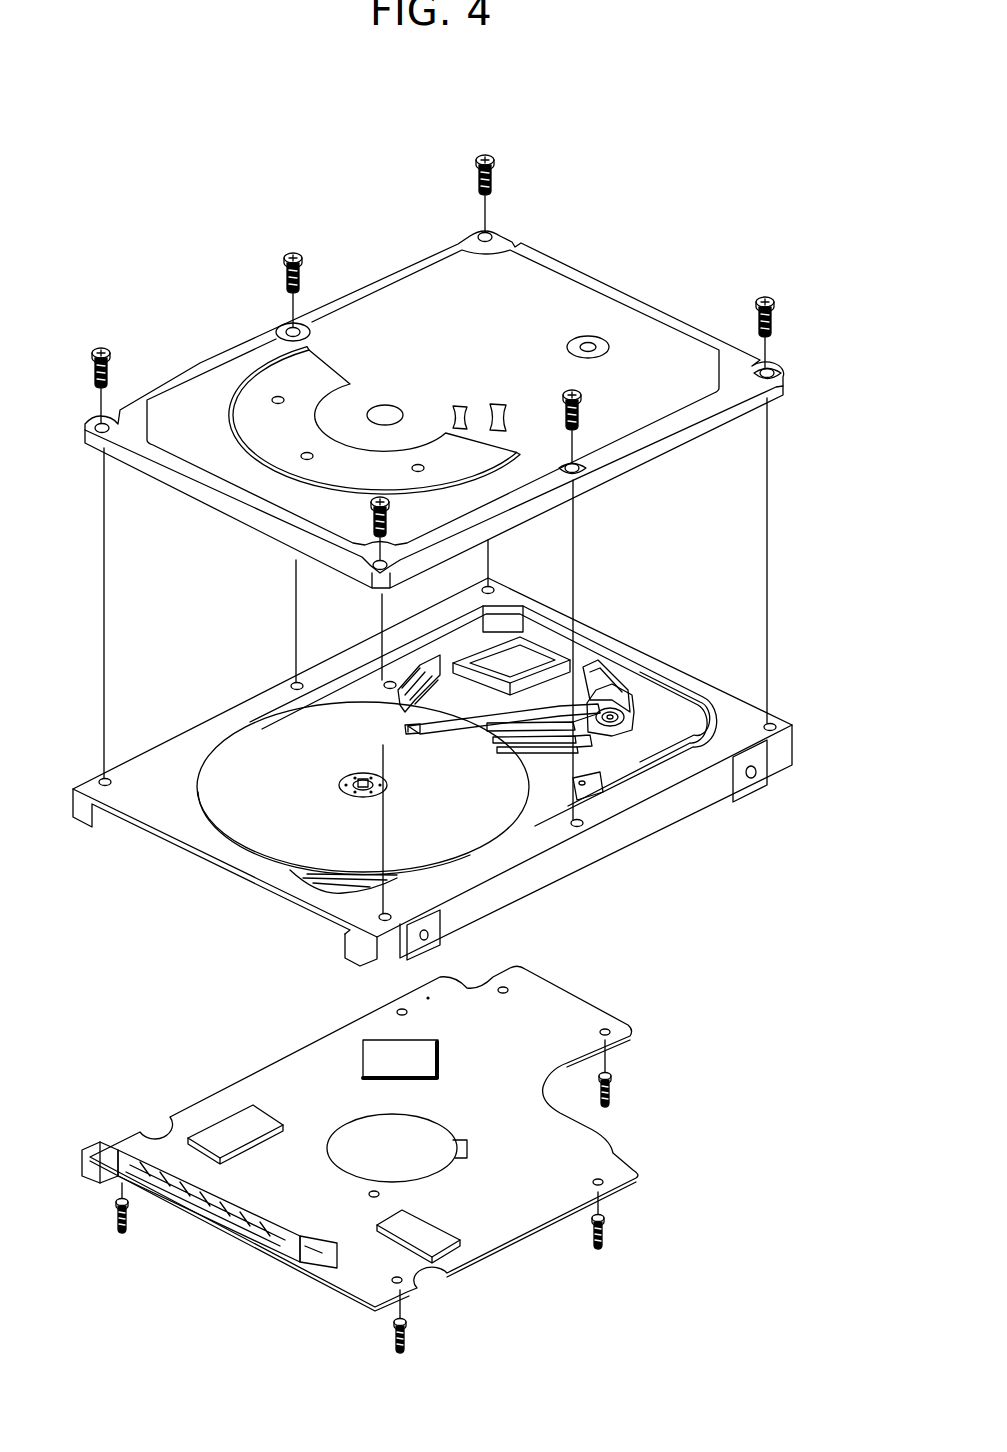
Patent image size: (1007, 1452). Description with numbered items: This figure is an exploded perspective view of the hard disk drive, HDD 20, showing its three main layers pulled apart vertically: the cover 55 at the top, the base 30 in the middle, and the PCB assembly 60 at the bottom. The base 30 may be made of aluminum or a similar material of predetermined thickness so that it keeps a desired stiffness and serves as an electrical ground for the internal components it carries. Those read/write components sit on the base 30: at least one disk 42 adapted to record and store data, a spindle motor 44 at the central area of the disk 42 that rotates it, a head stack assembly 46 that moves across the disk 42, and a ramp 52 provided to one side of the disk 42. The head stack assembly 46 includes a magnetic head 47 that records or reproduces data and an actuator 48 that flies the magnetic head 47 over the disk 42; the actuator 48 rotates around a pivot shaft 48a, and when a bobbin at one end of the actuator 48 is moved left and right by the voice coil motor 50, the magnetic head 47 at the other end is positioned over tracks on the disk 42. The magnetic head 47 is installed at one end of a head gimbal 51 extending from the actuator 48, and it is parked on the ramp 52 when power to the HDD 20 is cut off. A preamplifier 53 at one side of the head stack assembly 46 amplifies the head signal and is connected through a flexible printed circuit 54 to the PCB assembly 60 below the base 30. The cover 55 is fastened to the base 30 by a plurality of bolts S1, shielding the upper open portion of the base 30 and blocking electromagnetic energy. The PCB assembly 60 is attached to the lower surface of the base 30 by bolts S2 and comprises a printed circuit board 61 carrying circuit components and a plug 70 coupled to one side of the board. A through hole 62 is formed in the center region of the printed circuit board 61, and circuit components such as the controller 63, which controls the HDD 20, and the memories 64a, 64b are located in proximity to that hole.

The HDD 20 is at (172, 280).
The base 30 is at (632, 836).
The disk 42 is at (231, 822).
The spindle motor 44 is at (340, 782).
The head stack assembly 46 is at (680, 701).
The magnetic head 47 is at (410, 736).
The actuator 48 is at (545, 758).
The pivot shaft 48a is at (633, 735).
The voice coil motor 50 is at (670, 710).
The head gimbal 51 is at (403, 735).
The ramp 52 is at (378, 693).
The preamplifier 53 is at (597, 670).
The flexible printed circuit 54 is at (573, 690).
The cover 55 is at (617, 273).
The PCB assembly 60 is at (93, 1037).
The printed circuit board 61 is at (230, 1094).
The through hole 62 is at (430, 1139).
The controller 63 is at (392, 1055).
The memory 64a is at (250, 1118).
The memory 64b is at (425, 1225).
The plug 70 is at (132, 1133).
The bolts S1 is at (477, 160).
The bolts S2 is at (116, 1230).